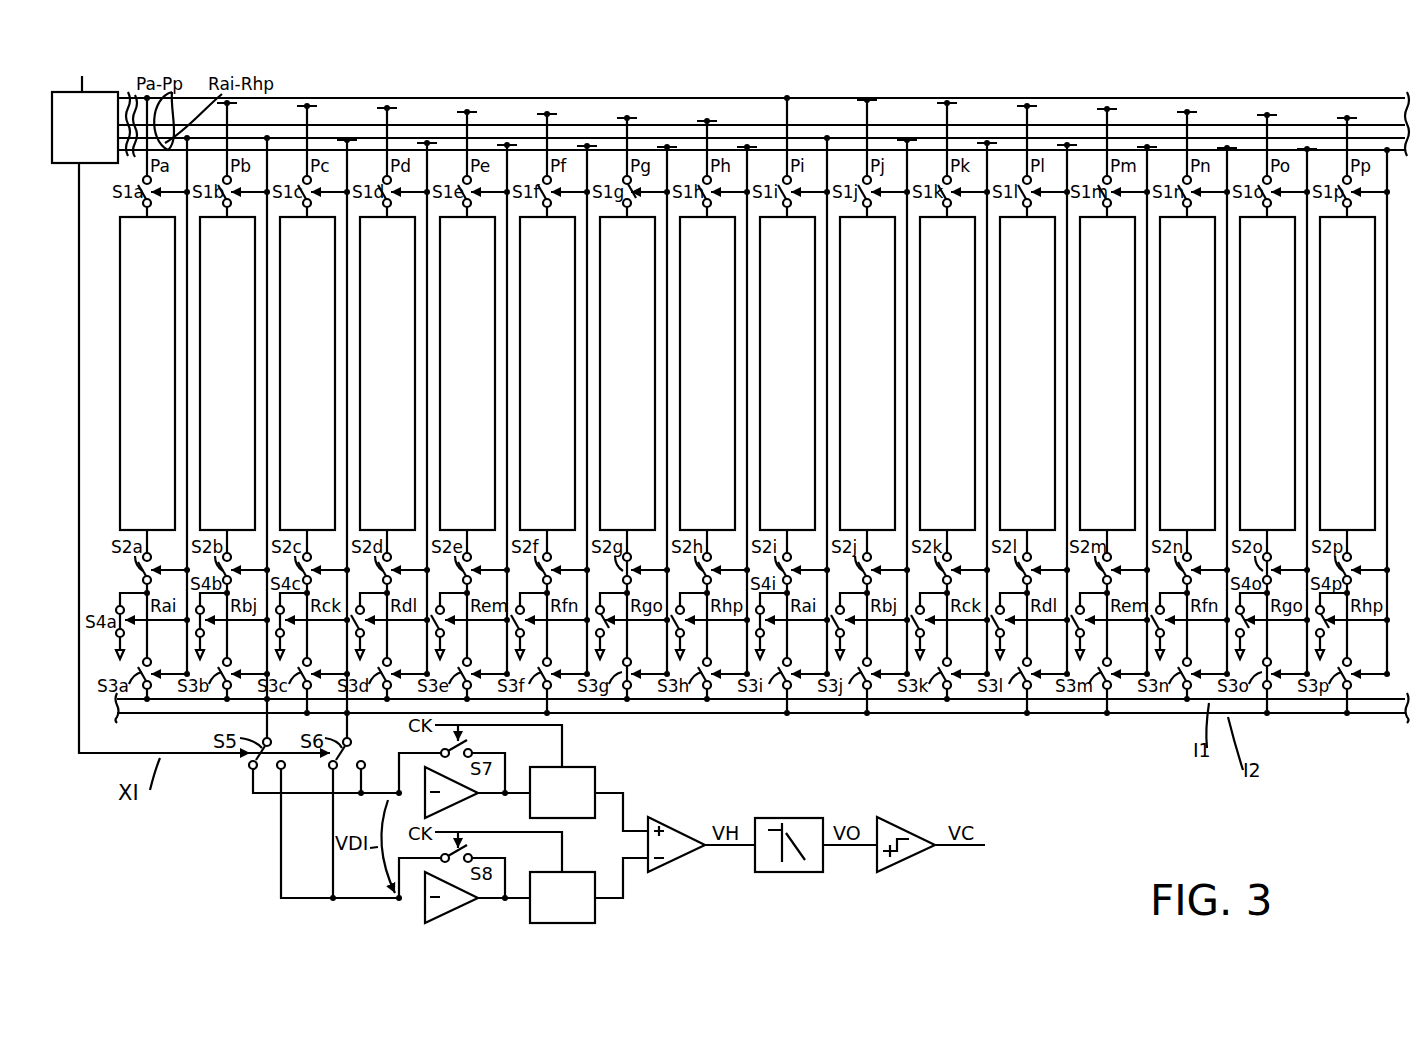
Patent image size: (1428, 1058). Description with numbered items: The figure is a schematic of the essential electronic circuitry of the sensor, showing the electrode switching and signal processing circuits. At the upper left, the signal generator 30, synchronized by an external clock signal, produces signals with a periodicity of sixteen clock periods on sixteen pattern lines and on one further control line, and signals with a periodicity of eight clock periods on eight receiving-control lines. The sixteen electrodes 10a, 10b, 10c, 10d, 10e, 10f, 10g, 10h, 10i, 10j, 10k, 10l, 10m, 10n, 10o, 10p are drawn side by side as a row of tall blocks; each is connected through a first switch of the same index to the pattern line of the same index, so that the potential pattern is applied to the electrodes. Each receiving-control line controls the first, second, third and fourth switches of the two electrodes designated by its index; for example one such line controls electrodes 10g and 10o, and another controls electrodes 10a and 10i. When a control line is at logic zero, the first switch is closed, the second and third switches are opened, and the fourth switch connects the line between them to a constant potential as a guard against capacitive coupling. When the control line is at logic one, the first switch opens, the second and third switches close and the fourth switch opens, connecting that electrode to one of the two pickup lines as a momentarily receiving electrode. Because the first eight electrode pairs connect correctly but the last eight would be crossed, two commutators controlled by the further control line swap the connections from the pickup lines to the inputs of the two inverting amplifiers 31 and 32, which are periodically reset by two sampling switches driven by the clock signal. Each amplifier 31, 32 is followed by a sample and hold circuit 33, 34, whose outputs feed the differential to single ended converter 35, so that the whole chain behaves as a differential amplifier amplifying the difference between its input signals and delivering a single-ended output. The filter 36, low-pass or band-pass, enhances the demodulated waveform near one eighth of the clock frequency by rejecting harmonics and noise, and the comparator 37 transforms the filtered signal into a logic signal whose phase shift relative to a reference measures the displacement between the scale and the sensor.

The signal generator 30 is at (72, 164).
The amplifier 31 is at (448, 796).
The amplifier 32 is at (448, 901).
The sample and hold circuit 33 is at (580, 770).
The sample and hold circuit 34 is at (580, 875).
The differential to single ended converter 35 is at (668, 840).
The filter 36 is at (805, 833).
The comparator 37 is at (890, 833).
The electrode 10a is at (147, 373).
The electrode 10b is at (227, 373).
The electrode 10c is at (307, 373).
The electrode 10d is at (387, 373).
The electrode 10e is at (467, 373).
The electrode 10f is at (547, 373).
The electrode 10g is at (627, 373).
The electrode 10h is at (707, 373).
The electrode 10i is at (787, 373).
The electrode 10j is at (867, 373).
The electrode 10k is at (947, 373).
The electrode 10l is at (1027, 373).
The electrode 10m is at (1107, 373).
The electrode 10n is at (1187, 373).
The electrode 10o is at (1267, 373).
The electrode 10p is at (1347, 373).